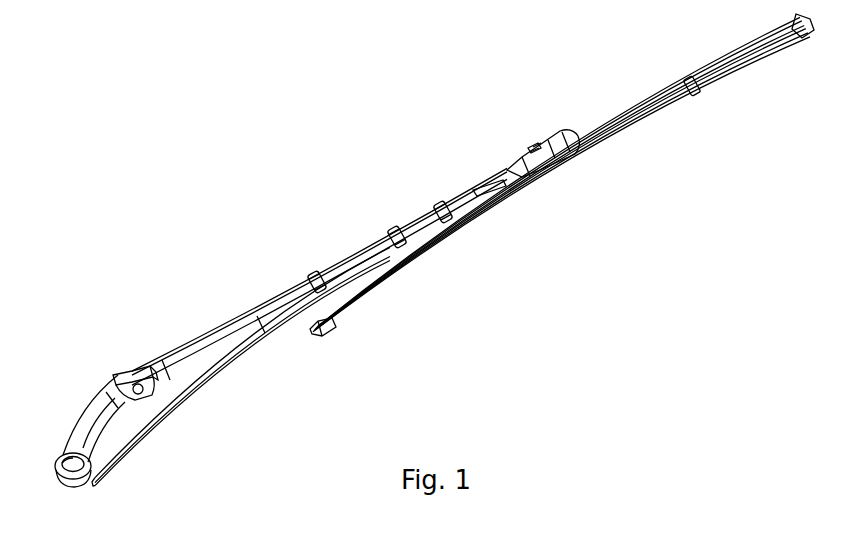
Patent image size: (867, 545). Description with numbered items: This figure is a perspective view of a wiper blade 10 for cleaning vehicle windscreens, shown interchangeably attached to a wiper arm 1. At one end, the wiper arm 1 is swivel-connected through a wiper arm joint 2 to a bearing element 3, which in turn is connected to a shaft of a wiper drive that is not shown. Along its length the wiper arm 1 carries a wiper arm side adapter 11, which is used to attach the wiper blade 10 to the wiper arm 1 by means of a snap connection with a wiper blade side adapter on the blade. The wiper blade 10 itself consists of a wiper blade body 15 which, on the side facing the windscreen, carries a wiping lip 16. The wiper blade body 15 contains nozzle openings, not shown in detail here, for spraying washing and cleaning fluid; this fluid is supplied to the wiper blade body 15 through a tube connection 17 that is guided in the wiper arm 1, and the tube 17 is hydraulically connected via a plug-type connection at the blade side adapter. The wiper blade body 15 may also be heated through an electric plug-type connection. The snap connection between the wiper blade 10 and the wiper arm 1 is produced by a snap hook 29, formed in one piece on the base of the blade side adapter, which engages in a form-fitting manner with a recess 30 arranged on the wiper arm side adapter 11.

The wiper arm 1 is at (201, 332).
The wiper arm joint 2 is at (130, 372).
The bearing element 3 is at (90, 426).
The wiper blade 10 is at (562, 175).
The wiper arm side adapter 11 is at (540, 155).
The wiper blade body 15 is at (664, 113).
The wiping lip 16 is at (748, 68).
The tube connection 17 is at (140, 425).
The snap hook 29 is at (561, 156).
The recess 30 is at (527, 150).